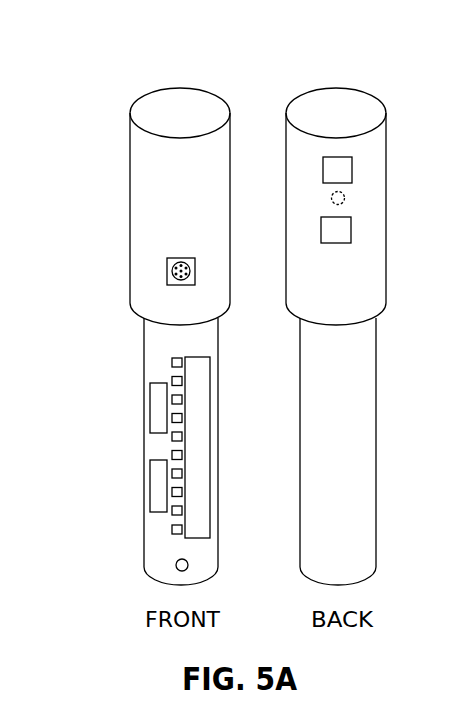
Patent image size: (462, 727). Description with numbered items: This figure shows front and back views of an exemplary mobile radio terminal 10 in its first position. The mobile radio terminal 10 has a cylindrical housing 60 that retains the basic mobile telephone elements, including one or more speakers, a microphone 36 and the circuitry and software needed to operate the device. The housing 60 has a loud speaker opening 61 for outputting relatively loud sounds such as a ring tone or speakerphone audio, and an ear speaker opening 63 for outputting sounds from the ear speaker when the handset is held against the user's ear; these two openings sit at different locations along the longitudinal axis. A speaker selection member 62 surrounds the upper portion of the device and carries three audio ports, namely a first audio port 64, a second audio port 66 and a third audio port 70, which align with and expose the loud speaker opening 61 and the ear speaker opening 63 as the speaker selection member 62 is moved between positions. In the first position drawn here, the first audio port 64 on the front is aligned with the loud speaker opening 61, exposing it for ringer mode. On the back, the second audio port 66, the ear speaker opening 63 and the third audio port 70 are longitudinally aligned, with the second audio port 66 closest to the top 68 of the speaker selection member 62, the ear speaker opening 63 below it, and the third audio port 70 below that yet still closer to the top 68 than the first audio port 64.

The mobile radio terminal 10 is at (123, 72).
The top of the speaker selection member 68 is at (320, 100).
The speaker selection member 62 is at (313, 158).
The cylindrical housing 60 is at (314, 548).
The loud speaker opening 61 is at (170, 262).
The first audio port 64 is at (166, 277).
The microphone 36 is at (173, 561).
The second audio port 66 is at (352, 170).
The ear speaker opening 63 is at (346, 197).
The third audio port 70 is at (351, 228).